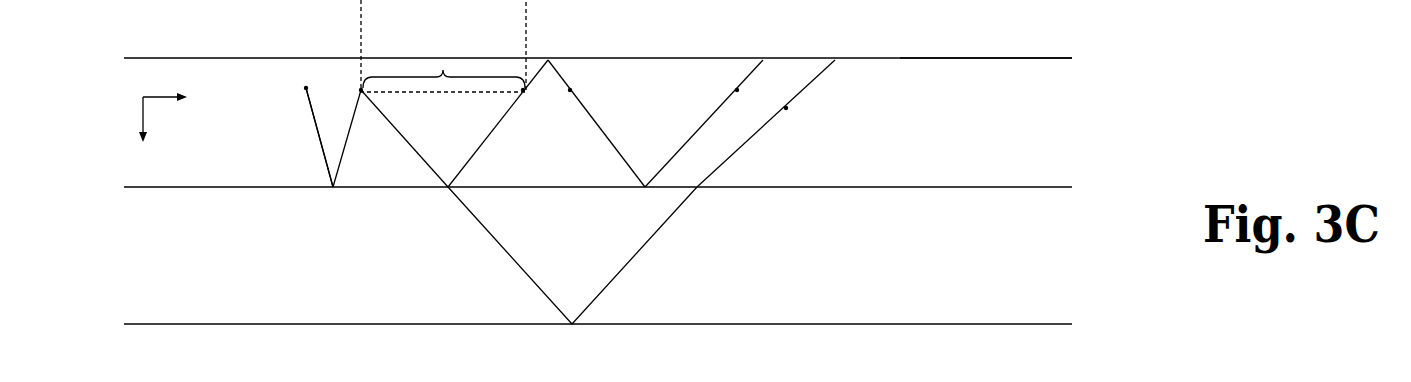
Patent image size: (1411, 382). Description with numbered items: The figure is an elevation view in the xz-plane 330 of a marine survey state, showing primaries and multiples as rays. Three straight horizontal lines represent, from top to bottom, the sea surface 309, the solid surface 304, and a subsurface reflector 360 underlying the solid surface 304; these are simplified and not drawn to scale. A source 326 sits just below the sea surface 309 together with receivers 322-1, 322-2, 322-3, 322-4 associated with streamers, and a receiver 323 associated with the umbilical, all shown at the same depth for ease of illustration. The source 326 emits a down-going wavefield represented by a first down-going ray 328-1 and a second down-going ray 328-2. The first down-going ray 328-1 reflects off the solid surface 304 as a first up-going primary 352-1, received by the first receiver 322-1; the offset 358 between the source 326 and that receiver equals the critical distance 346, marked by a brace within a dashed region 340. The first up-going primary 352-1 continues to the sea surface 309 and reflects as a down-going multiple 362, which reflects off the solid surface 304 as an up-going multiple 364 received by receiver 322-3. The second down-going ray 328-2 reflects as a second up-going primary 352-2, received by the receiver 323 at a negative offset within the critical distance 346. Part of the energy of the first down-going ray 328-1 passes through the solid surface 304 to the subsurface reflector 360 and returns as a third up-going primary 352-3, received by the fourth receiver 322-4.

The solid surface 304 is at (1030, 187).
The sea surface 309 is at (1028, 58).
The receiver 323 is at (304, 88).
The source 326 is at (359, 89).
The first down-going ray 328-1 is at (395, 129).
The second down-going ray 328-2 is at (349, 137).
The xz-plane 330 is at (143, 97).
The region 340 is at (443, 46).
The critical distance 346 is at (443, 70).
The first up-going primary 352-1 is at (499, 124).
The second up-going primary 352-2 is at (317, 137).
The third up-going primary 352-3 is at (678, 219).
The offset 358 is at (986, 29).
The subsurface reflector 360 is at (1032, 324).
The down-going multiple 362 is at (600, 127).
The up-going multiple 364 is at (708, 117).
The first receiver 322-1 is at (527, 91).
The receiver 322-2 is at (572, 91).
The receiver 322-3 is at (737, 89).
The fourth receiver 322-4 is at (788, 108).